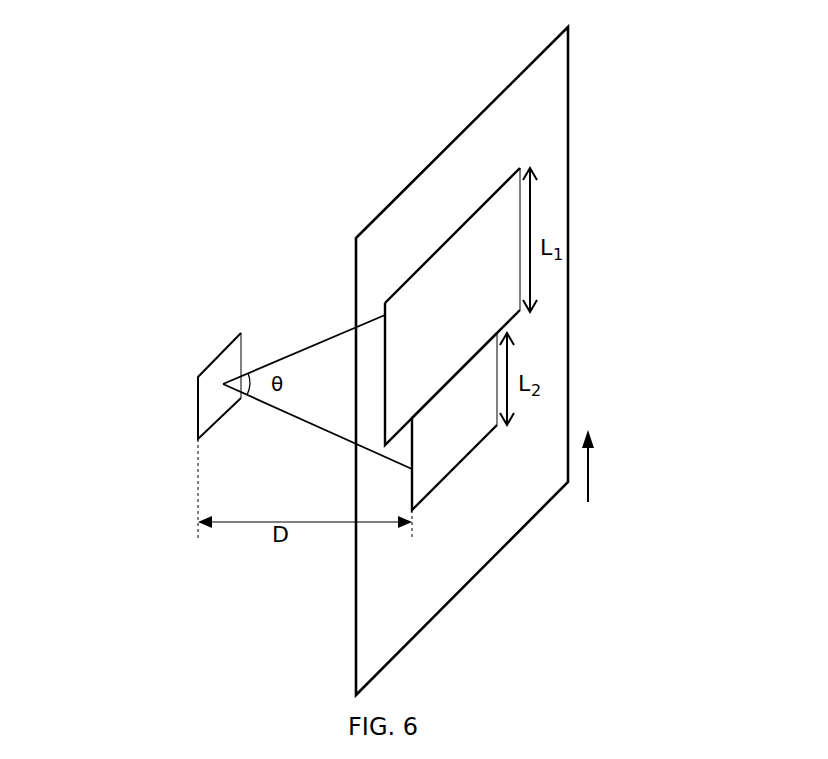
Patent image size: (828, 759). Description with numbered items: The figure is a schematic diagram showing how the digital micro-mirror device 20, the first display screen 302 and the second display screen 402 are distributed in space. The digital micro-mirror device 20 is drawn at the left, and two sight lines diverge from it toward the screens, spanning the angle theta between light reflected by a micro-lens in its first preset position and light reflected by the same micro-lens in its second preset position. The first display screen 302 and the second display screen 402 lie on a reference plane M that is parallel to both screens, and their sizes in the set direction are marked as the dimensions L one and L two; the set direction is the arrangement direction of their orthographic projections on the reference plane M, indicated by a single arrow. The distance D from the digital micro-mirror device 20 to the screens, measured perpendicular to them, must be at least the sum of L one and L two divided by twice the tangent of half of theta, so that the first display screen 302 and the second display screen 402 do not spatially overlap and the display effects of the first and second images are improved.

The reference plane M is at (498, 118).
The first display screen 302 is at (468, 255).
The second display screen 402 is at (440, 462).
The digital micro-mirror device 20 is at (212, 396).